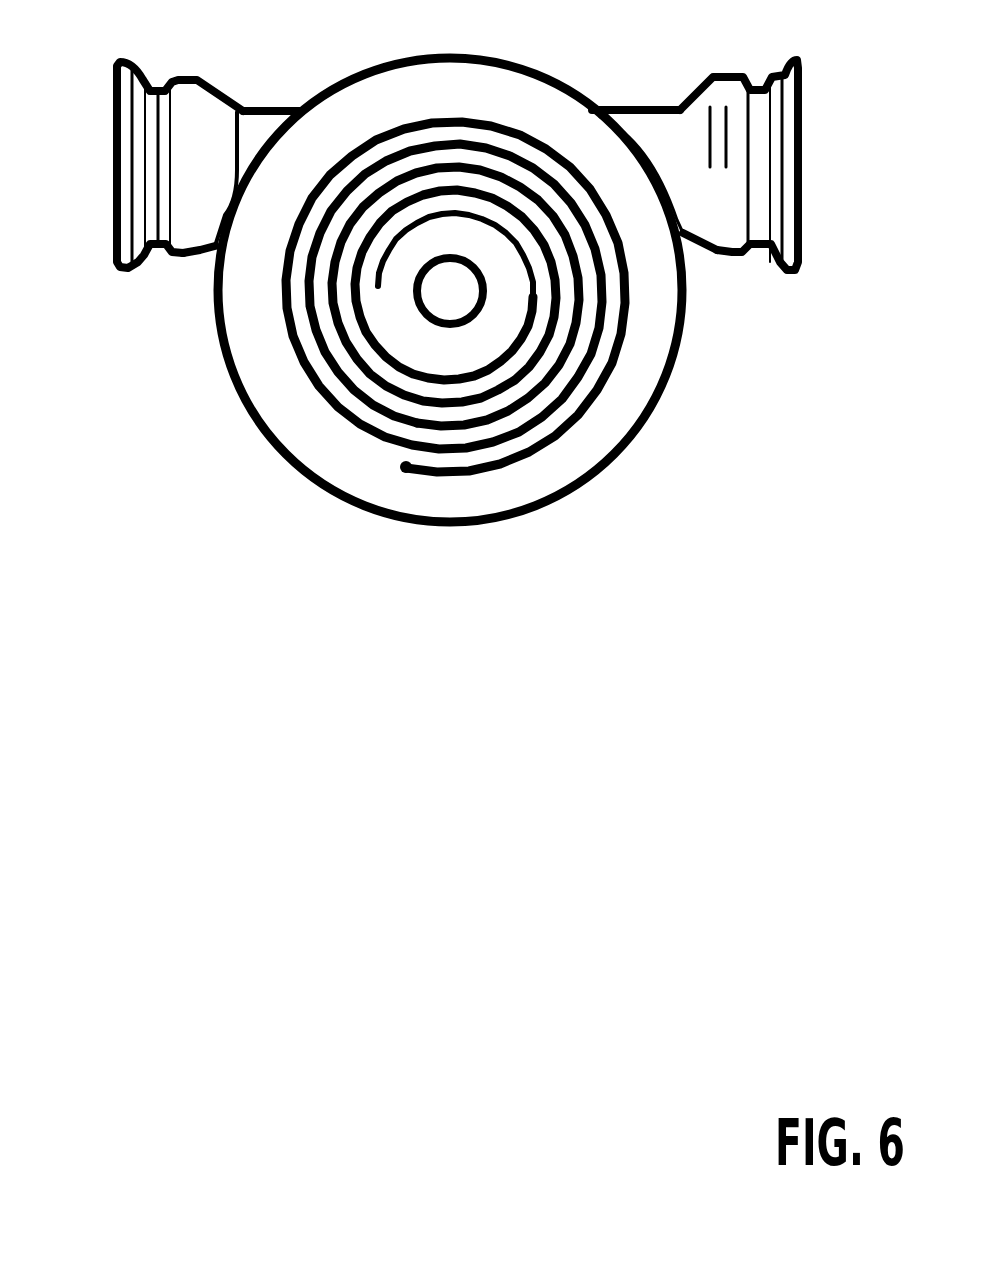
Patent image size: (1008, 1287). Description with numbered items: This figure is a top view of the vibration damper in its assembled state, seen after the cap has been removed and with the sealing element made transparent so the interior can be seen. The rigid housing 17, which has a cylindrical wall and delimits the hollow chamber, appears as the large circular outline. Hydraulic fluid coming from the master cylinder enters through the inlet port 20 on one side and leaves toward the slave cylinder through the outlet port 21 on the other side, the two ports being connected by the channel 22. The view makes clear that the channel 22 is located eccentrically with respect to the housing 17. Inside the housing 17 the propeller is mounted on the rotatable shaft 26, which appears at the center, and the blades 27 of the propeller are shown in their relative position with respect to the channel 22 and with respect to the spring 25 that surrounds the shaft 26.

The housing 17 is at (685, 355).
The inlet port 20 is at (113, 117).
The outlet port 21 is at (806, 94).
The channel 22 is at (647, 125).
The spring 25 is at (587, 413).
The rotatable shaft 26 is at (451, 275).
The blades 27 is at (380, 385).